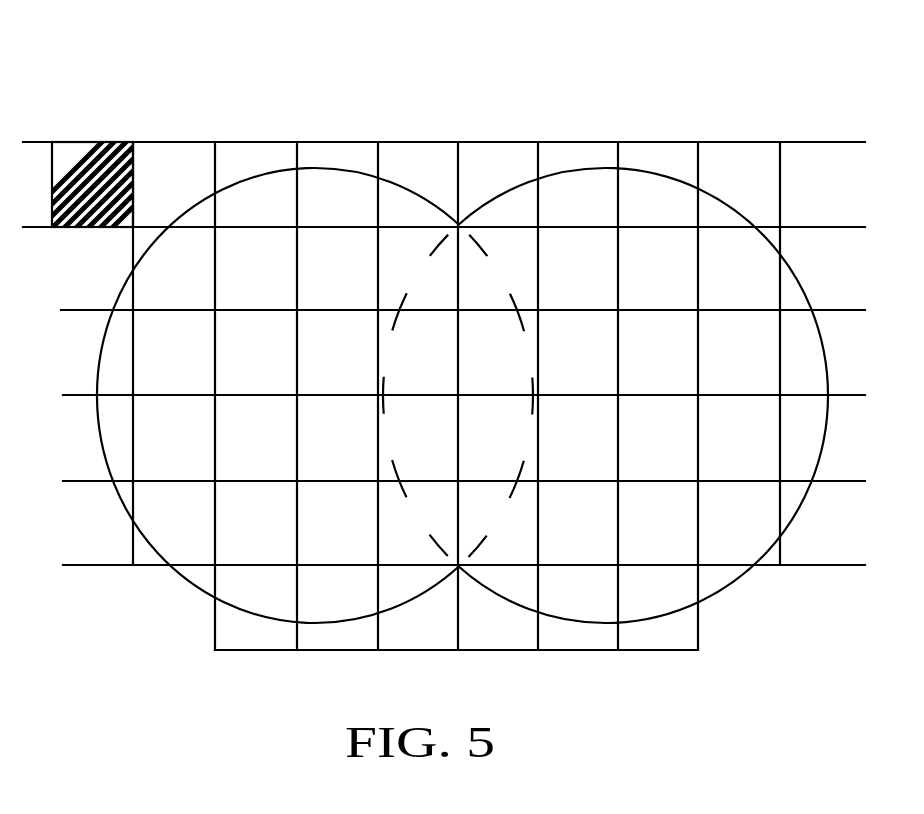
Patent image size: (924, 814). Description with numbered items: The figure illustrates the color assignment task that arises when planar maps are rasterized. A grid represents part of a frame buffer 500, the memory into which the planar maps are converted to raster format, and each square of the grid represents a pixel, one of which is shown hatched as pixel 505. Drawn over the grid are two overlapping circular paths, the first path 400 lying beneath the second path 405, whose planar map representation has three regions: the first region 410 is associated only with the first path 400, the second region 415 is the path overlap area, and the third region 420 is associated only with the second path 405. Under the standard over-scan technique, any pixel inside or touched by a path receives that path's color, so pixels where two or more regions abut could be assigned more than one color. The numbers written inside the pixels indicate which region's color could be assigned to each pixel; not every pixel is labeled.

The frame buffer 500 is at (812, 180).
The pixel 505 is at (92, 152).
The path 1 400 is at (306, 166).
The path 2 405 is at (608, 166).
The region 1 410 is at (205, 572).
The region 2 415 is at (462, 566).
The region 3 420 is at (717, 578).